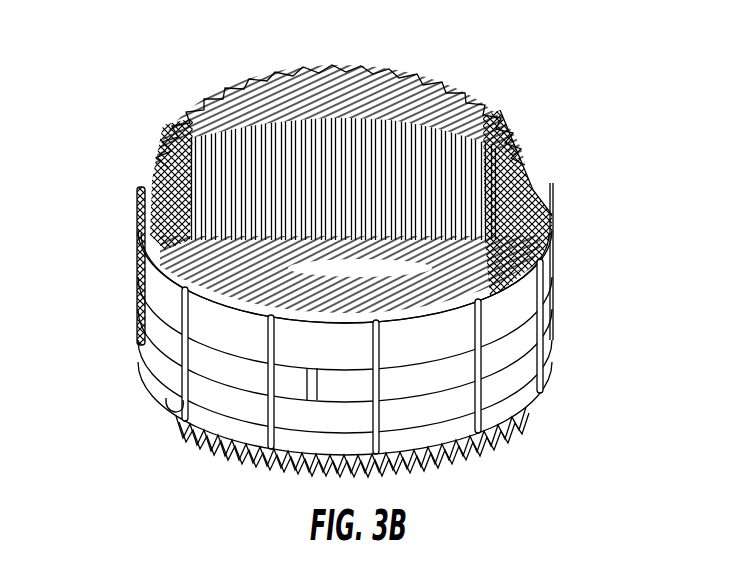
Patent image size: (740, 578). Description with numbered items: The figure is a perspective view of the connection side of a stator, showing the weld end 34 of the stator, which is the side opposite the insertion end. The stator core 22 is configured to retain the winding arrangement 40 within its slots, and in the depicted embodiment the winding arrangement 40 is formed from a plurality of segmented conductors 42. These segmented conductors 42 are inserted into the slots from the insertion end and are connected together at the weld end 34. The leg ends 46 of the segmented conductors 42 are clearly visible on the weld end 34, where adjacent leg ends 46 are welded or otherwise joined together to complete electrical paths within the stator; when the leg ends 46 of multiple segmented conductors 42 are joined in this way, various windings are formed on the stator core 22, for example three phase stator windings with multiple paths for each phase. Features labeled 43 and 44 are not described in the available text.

The stator core 22 is at (493, 372).
The weld end 34 is at (540, 183).
The winding arrangement 40 is at (145, 197).
The segmented conductors 42 is at (273, 77).
The conductor end connections 43 is at (317, 73).
The stator teeth 44 is at (293, 470).
The leg ends 46 is at (162, 220).